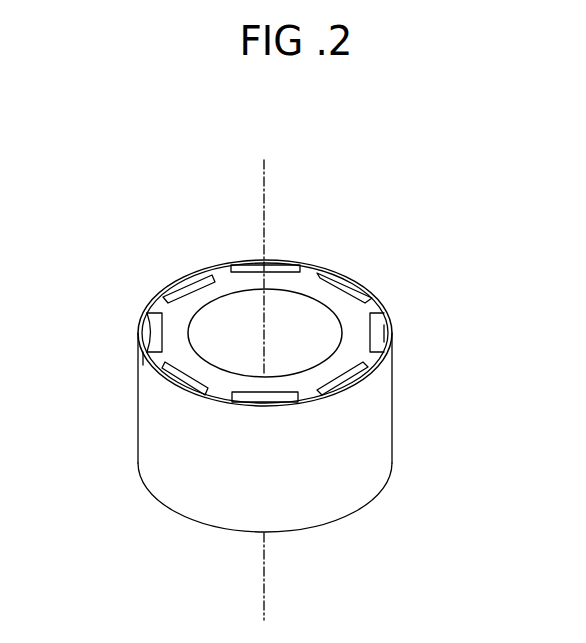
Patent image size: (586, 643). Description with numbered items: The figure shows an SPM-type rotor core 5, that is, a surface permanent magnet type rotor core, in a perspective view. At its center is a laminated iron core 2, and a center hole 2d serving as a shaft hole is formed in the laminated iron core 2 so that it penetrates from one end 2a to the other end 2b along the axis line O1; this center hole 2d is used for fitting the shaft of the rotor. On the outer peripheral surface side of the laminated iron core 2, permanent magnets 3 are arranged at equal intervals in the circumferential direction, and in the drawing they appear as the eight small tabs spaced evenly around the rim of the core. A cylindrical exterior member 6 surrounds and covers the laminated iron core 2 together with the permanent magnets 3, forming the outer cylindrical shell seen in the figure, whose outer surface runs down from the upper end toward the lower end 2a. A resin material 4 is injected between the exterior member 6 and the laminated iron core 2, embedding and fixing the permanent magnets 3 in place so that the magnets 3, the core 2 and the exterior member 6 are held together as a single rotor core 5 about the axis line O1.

The laminated iron core 2 is at (282, 299).
The one end 2a is at (362, 508).
The other end 2b is at (373, 332).
The center hole 2d is at (231, 318).
The permanent magnets 3 is at (187, 280).
The resin material 4 is at (143, 360).
The SPM-type rotor core 5 is at (456, 240).
The cylindrical exterior member 6 is at (305, 464).
The axis line O1 is at (262, 373).